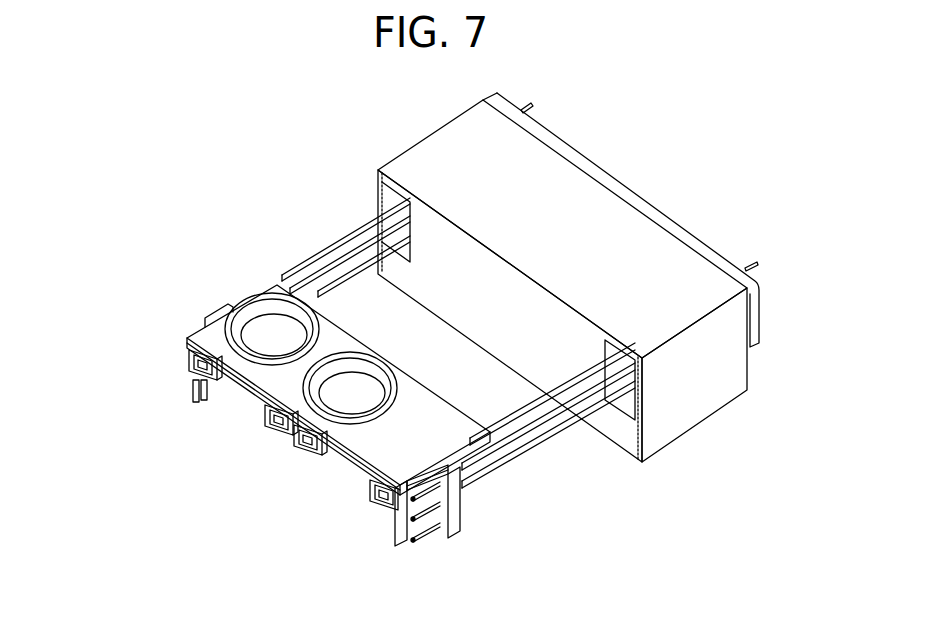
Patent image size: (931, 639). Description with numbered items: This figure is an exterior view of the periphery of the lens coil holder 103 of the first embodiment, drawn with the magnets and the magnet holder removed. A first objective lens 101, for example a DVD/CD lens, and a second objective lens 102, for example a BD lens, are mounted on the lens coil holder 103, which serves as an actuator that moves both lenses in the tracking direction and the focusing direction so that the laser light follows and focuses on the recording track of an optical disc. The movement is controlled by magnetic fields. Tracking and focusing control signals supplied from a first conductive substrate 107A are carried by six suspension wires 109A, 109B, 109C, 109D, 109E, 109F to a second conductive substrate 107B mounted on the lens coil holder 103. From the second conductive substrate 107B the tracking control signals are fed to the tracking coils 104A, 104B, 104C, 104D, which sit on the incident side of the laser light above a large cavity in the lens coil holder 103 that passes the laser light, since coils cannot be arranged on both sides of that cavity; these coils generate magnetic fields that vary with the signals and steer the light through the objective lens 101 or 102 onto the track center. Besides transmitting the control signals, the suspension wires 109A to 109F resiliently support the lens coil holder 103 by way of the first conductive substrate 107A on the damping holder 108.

The first objective lens 101 is at (243, 307).
The second objective lens 102 is at (348, 425).
The lens coil holder 103 is at (452, 437).
The tracking coil 104A is at (187, 366).
The tracking coil 104B is at (265, 422).
The tracking coil 104C is at (294, 448).
The tracking coil 104D is at (373, 505).
The first conductive substrate 107A is at (692, 232).
The second conductive substrate 107B is at (427, 522).
The damping holder 108 is at (727, 390).
The suspension wire 109A is at (508, 437).
The suspension wire 109B is at (547, 433).
The suspension wire 109C is at (583, 433).
The suspension wire 109D is at (298, 262).
The suspension wire 109E is at (333, 255).
The suspension wire 109F is at (355, 222).